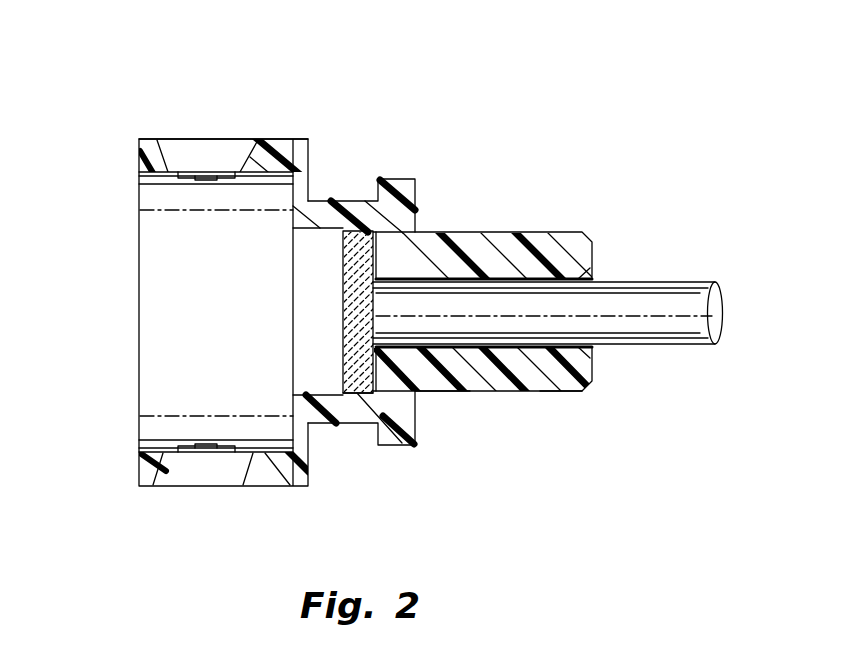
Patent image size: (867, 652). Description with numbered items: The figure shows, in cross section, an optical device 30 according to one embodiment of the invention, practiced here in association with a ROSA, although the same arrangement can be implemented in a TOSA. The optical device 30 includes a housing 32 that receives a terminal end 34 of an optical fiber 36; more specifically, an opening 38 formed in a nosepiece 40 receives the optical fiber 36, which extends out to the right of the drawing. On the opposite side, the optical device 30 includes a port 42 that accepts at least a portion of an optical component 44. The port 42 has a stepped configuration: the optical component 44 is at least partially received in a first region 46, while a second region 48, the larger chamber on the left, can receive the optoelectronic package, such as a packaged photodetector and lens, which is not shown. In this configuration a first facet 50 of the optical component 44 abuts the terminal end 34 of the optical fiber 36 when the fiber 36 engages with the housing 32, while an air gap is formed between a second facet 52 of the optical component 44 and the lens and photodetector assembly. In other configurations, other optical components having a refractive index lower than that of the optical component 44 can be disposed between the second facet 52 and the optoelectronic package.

The optical device 30 is at (203, 125).
The housing 32 is at (311, 170).
The terminal end 34 is at (377, 323).
The optical fiber 36 is at (656, 333).
The opening 38 is at (465, 350).
The nosepiece 40 is at (568, 383).
The port 42 is at (160, 223).
The optical component 44 is at (358, 232).
The first region 46 is at (310, 305).
The second region 48 is at (262, 365).
The first facet 50 is at (372, 340).
The second facet 52 is at (343, 268).